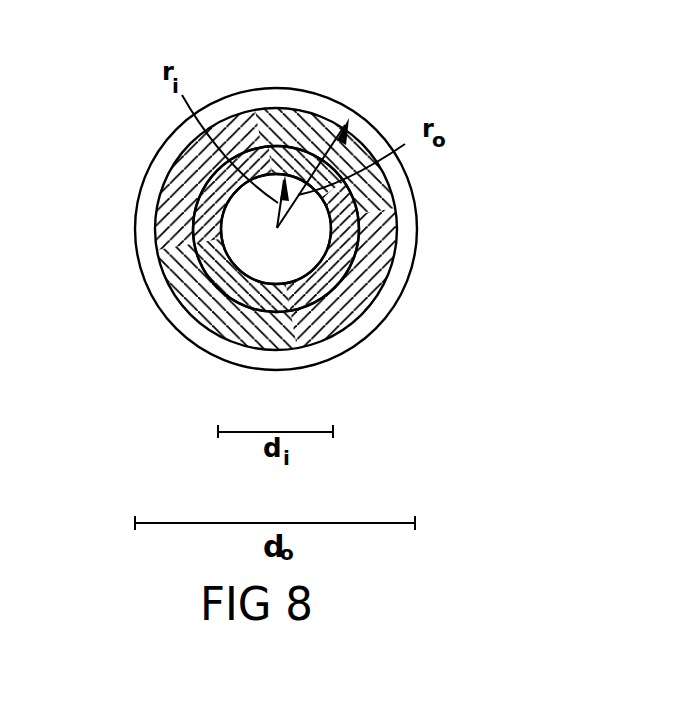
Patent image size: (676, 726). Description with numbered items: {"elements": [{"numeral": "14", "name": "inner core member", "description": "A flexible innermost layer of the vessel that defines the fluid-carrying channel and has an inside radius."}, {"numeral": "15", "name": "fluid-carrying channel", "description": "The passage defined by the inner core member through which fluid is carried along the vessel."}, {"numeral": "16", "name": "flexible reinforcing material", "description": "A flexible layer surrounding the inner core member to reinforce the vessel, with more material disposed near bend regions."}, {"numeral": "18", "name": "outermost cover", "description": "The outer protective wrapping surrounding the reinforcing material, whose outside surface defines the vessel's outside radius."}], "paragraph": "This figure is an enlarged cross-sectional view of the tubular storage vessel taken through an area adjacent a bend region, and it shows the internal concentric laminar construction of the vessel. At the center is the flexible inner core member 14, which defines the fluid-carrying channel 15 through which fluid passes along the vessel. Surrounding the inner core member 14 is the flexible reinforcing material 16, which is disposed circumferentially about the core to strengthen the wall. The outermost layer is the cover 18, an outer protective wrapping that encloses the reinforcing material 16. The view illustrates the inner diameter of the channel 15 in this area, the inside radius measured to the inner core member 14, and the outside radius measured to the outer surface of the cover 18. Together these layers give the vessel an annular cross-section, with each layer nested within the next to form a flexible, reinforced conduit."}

The inner layer 14 is at (335, 250).
The bore / lumen 15 is at (242, 245).
The outer layer 16 is at (362, 253).
The outer sheath 18 is at (362, 340).